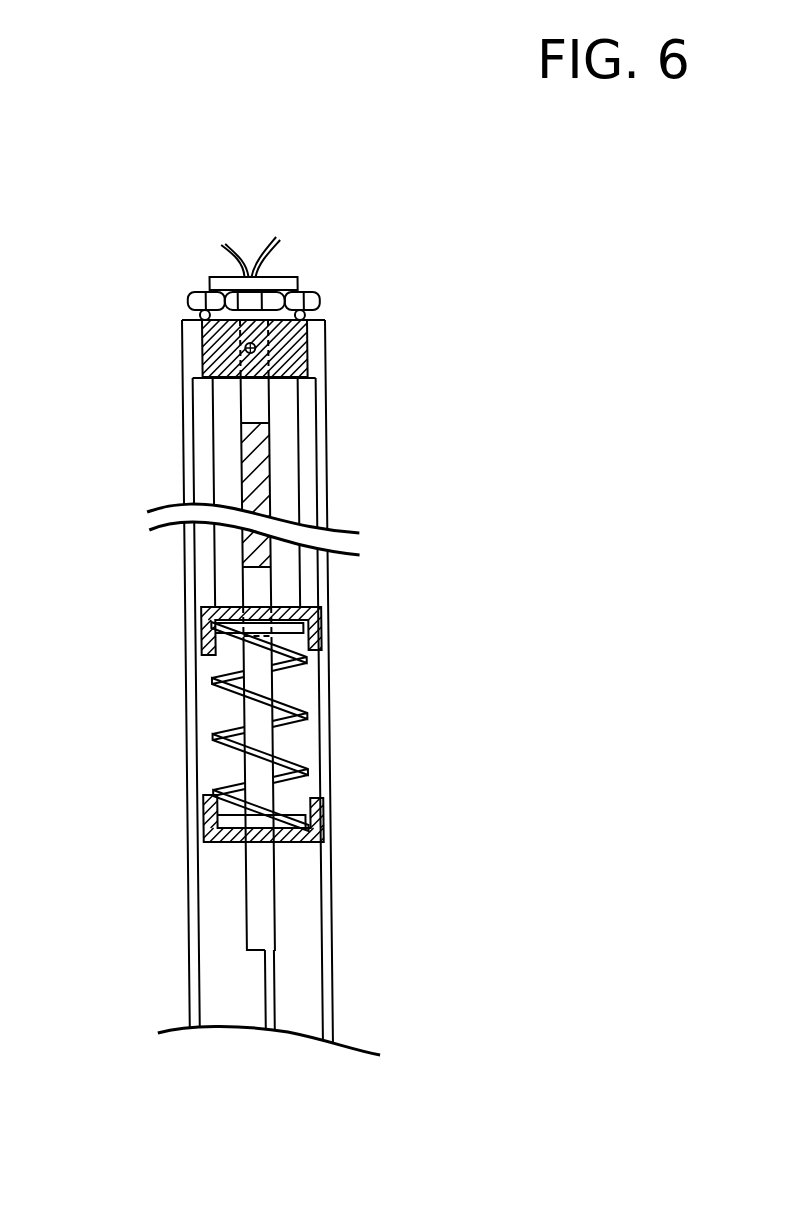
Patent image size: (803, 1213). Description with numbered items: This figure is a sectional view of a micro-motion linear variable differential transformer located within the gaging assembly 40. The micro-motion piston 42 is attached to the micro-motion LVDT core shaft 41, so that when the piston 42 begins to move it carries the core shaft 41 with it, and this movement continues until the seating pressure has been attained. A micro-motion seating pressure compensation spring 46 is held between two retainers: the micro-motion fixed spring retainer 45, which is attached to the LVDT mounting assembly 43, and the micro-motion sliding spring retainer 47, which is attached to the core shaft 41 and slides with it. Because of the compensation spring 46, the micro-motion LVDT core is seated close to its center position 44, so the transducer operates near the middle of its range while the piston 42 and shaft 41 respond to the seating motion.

The tube 40 is at (212, 425).
The micro-motion LVDT core shaft 41 is at (248, 903).
The micro-motion piston 42 is at (257, 982).
The LVDT mounting assembly 43 is at (327, 358).
The center position 44 is at (270, 473).
The micro-motion fixed spring retainer 45 is at (323, 632).
The micro-motion seating pressure compensation spring 46 is at (313, 718).
The micro-motion sliding spring retainer 47 is at (323, 824).